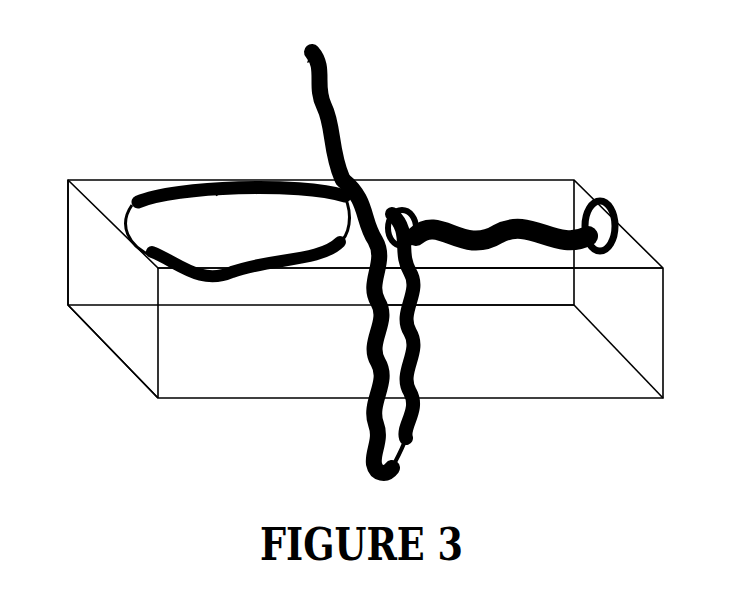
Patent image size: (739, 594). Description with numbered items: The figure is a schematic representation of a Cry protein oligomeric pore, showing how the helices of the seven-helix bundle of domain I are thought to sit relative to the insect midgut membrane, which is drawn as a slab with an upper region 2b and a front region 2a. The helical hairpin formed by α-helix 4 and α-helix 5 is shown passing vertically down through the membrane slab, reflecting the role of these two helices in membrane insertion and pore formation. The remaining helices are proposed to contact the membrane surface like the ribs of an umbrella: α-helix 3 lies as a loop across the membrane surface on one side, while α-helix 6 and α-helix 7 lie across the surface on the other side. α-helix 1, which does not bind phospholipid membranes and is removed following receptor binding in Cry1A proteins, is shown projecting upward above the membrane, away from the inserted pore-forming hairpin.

The α-helix 1 is at (332, 114).
The front region of carrier 2a is at (366, 283).
The side region of carrier 2b is at (113, 289).
The α-helix 3 is at (238, 221).
The α-helix 4 is at (362, 326).
The α-helix 5 is at (416, 341).
The α-helix 6 is at (501, 224).
The α-helix 7 is at (521, 286).